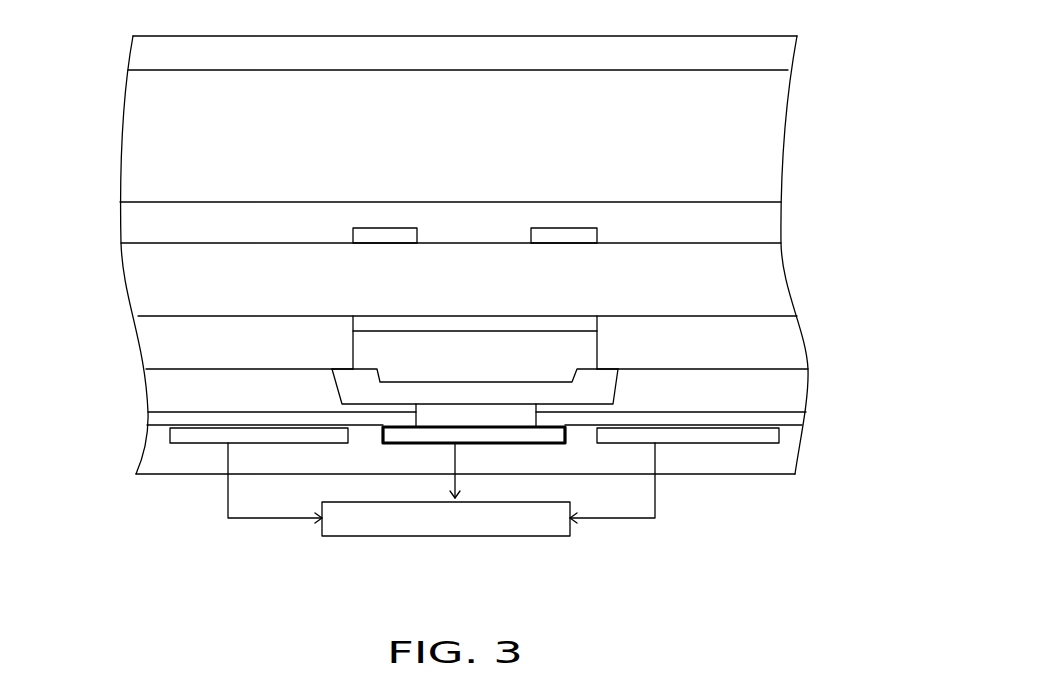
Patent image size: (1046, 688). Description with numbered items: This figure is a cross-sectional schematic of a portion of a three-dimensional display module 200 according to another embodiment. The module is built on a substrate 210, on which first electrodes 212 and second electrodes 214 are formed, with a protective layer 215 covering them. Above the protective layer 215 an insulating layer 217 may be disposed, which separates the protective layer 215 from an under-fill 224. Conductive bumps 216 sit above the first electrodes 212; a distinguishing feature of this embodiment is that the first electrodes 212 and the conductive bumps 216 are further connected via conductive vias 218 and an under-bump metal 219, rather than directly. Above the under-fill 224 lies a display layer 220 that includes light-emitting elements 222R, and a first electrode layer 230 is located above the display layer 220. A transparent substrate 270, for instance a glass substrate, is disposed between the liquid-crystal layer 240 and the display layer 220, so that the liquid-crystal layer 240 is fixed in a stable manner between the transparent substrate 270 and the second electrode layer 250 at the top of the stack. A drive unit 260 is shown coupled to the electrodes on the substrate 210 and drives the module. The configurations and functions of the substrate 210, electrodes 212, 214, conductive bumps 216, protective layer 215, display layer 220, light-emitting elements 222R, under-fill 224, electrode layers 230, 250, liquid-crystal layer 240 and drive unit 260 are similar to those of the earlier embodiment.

The three-dimensional display module 200 is at (858, 17).
The second electrode layer 250 is at (137, 52).
The liquid-crystal layer 240 is at (137, 125).
The first electrode layer 230 is at (345, 227).
The transparent substrate 270 is at (137, 230).
The light-emitting element 222R is at (137, 279).
The display layer 220 is at (120, 334).
The under-fill 224 is at (150, 358).
The conductive bump 216 is at (367, 354).
The under-bump metal 219 is at (580, 392).
The insulating layer 217 is at (798, 385).
The conductive via 218 is at (515, 415).
The protective layer 215 is at (798, 420).
The first electrode 212 is at (398, 435).
The second electrode 214 is at (180, 433).
The substrate 210 is at (152, 459).
The drive unit 260 is at (457, 527).